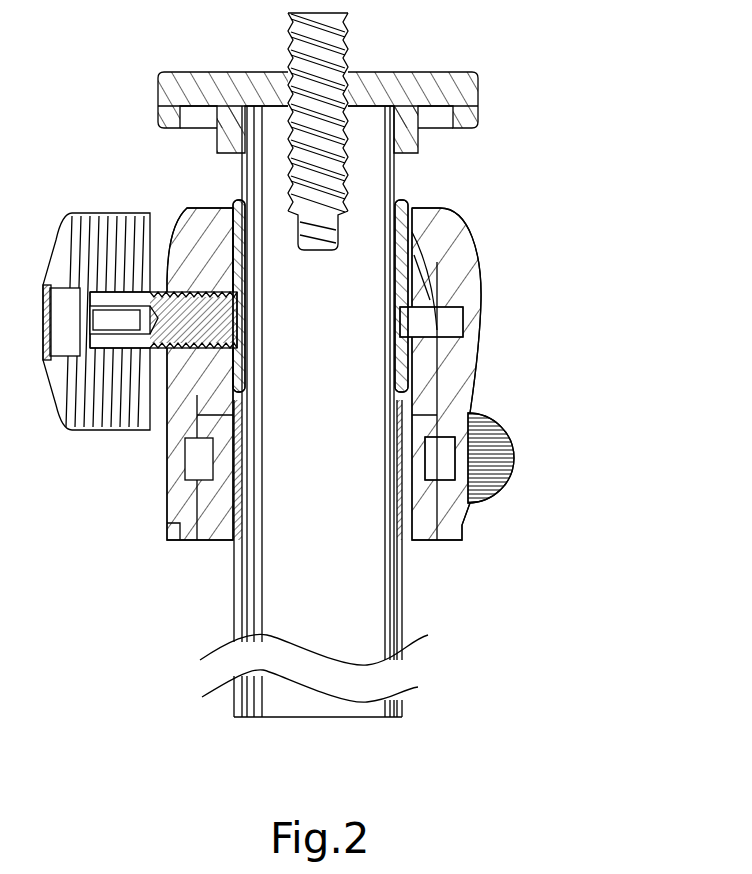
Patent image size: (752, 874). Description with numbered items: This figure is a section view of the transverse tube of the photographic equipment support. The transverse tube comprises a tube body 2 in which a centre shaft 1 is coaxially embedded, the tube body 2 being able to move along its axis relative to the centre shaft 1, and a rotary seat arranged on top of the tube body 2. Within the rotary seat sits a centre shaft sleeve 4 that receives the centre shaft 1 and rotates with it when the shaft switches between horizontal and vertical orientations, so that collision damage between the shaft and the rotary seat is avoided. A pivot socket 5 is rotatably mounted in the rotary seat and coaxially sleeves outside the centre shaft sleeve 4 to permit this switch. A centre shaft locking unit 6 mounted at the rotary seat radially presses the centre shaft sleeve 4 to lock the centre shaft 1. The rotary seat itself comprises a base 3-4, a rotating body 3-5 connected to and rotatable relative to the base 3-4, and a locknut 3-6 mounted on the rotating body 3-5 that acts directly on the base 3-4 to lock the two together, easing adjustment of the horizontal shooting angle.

The centre shaft 1 is at (392, 647).
The tube body 2 is at (400, 602).
The base 3-4 is at (205, 538).
The rotating body 3-5 is at (458, 382).
The locknut 3-6 is at (512, 448).
The centre shaft sleeve 4 is at (416, 207).
The pivot socket 5 is at (428, 268).
The centre shaft locking unit 6 is at (115, 432).